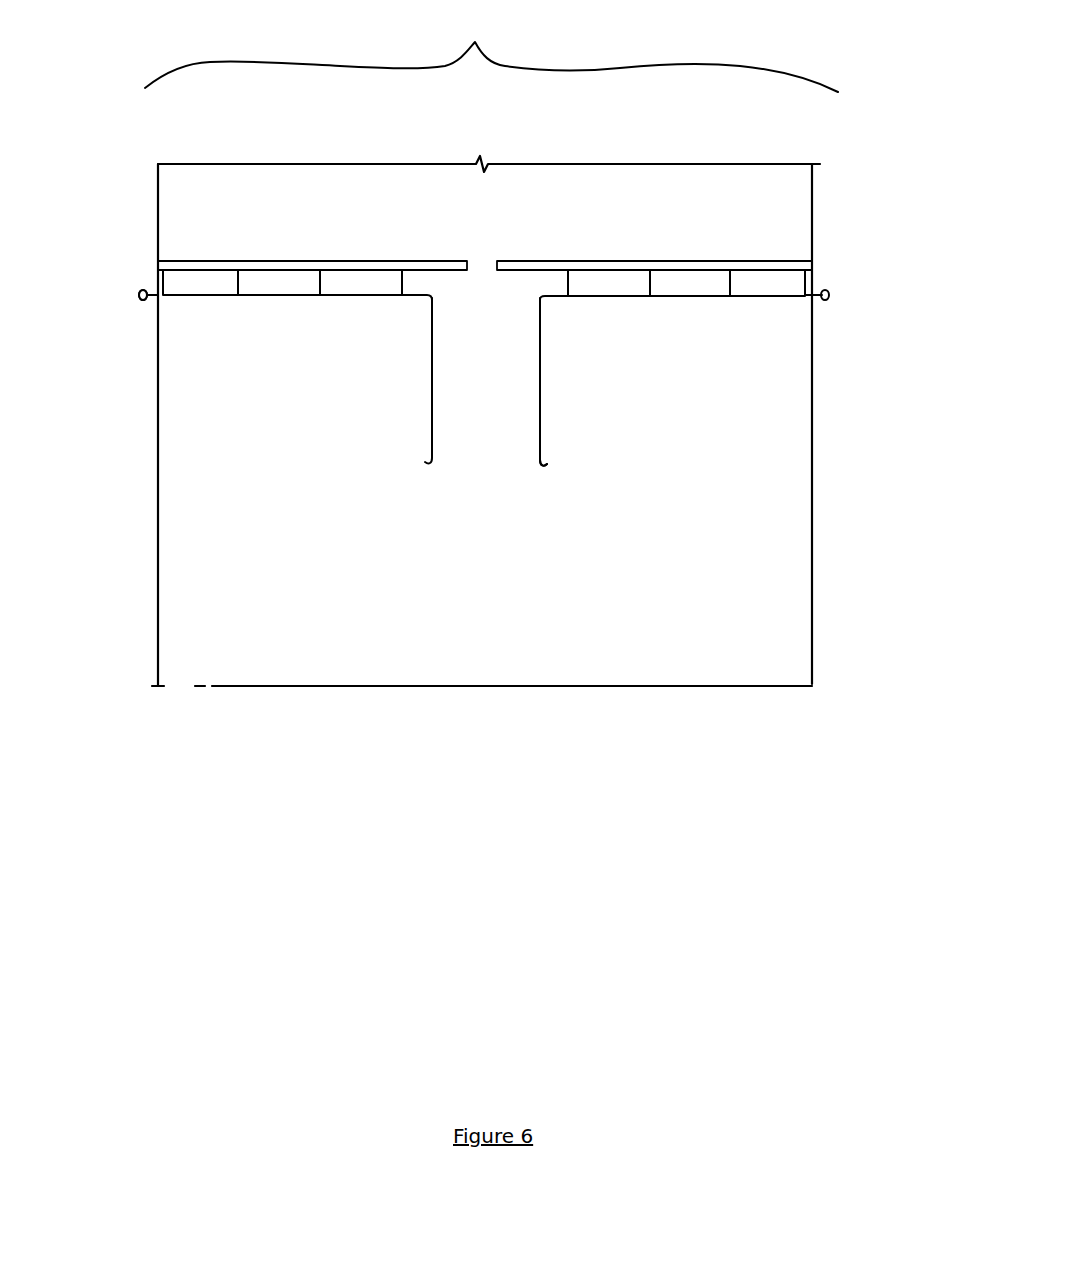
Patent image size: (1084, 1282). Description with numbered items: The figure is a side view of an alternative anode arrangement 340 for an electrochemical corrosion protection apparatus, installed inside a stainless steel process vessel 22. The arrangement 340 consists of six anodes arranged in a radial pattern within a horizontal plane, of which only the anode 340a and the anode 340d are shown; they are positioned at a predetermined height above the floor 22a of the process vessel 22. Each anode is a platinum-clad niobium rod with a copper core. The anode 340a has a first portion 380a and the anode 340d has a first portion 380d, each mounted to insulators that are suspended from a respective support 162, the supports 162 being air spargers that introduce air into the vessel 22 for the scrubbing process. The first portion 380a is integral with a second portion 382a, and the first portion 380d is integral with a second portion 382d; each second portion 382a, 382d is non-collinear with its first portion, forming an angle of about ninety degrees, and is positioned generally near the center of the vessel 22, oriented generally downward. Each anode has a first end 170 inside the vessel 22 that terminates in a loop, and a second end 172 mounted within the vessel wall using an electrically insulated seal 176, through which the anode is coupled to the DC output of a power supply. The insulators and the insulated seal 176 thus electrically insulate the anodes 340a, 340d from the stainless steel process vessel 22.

The anode arrangement 340 is at (491, 51).
The stainless steel process vessel 22 is at (158, 206).
The floor 22a is at (201, 680).
The support 162 is at (753, 263).
The second end 172 is at (141, 288).
The electrically insulated seal 176 is at (145, 301).
The anode 340a is at (275, 297).
The first portion 380a is at (330, 302).
The second portion 382a is at (424, 385).
The anode 340d is at (687, 297).
The first portion 380d is at (665, 300).
The second portion 382d is at (549, 388).
The first end 170 is at (558, 465).